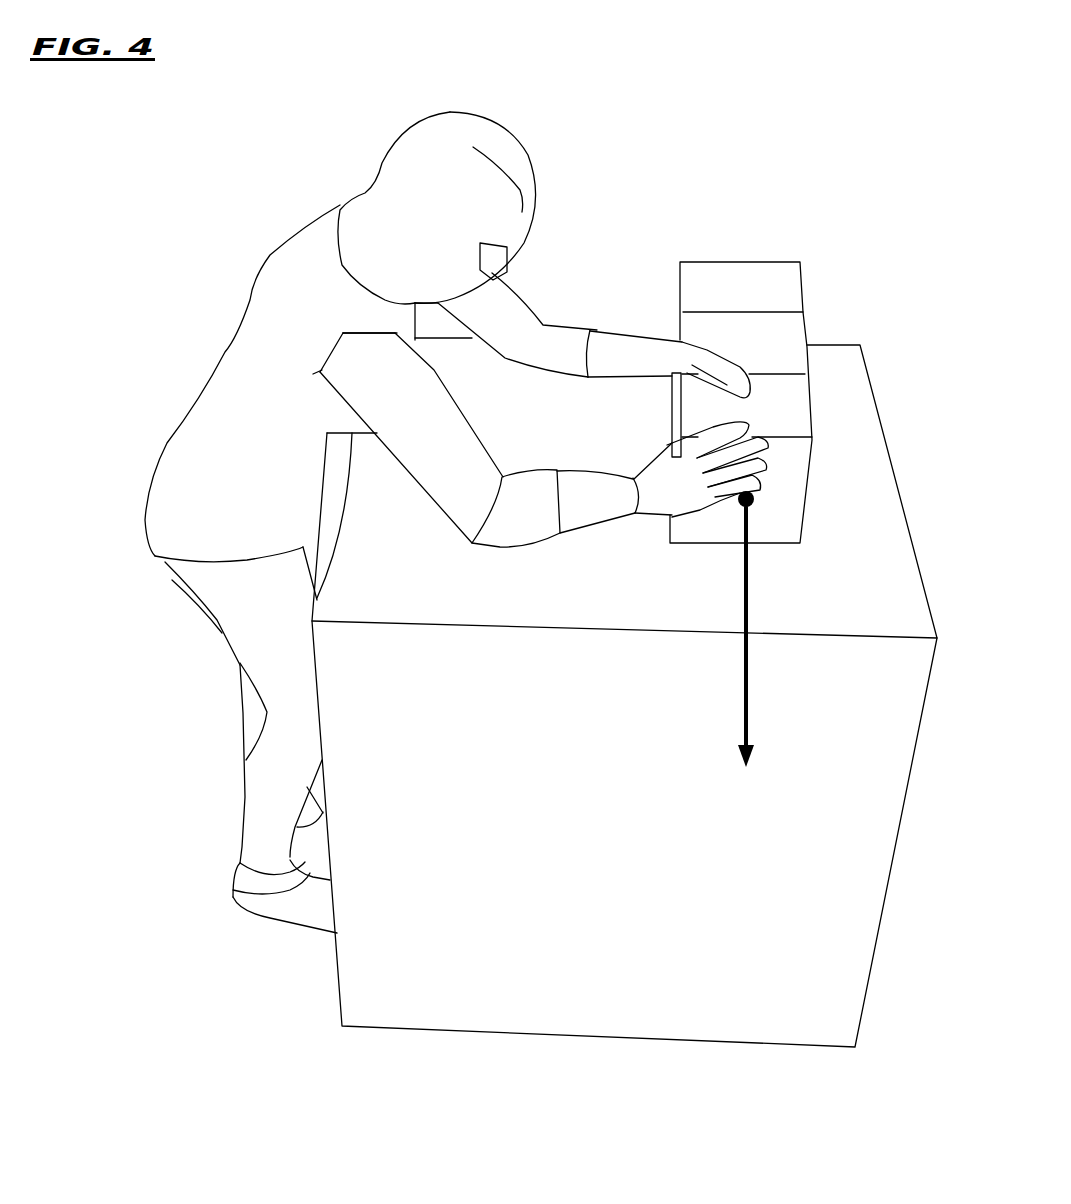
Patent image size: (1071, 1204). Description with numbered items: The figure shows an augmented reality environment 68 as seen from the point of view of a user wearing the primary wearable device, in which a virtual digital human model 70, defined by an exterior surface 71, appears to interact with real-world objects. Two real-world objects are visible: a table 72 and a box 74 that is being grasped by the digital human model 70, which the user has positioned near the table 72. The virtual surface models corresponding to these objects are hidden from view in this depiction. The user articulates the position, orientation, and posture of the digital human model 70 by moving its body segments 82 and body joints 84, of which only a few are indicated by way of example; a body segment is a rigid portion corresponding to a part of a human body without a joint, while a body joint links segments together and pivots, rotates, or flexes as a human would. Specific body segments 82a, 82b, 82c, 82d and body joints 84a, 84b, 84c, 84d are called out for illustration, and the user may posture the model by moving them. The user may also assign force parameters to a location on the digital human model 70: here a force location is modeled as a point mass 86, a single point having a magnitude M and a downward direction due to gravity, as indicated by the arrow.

The augmented reality environment 68 is at (150, 140).
The digital human model 70 is at (508, 133).
The exterior surface 71 is at (178, 427).
The real-world object (table) 72 is at (865, 341).
The real-world object (box) 74 is at (800, 547).
The body segments 82 is at (378, 180).
The body segment 82a is at (247, 631).
The body segment 82b is at (440, 462).
The body segment 82c is at (573, 513).
The body segment 82d is at (673, 413).
The body joints 84 is at (220, 549).
The body joint 84a is at (343, 333).
The body joint 84b is at (487, 527).
The body joint 84c is at (636, 492).
The body joint 84d is at (673, 427).
The point mass 86 is at (750, 499).